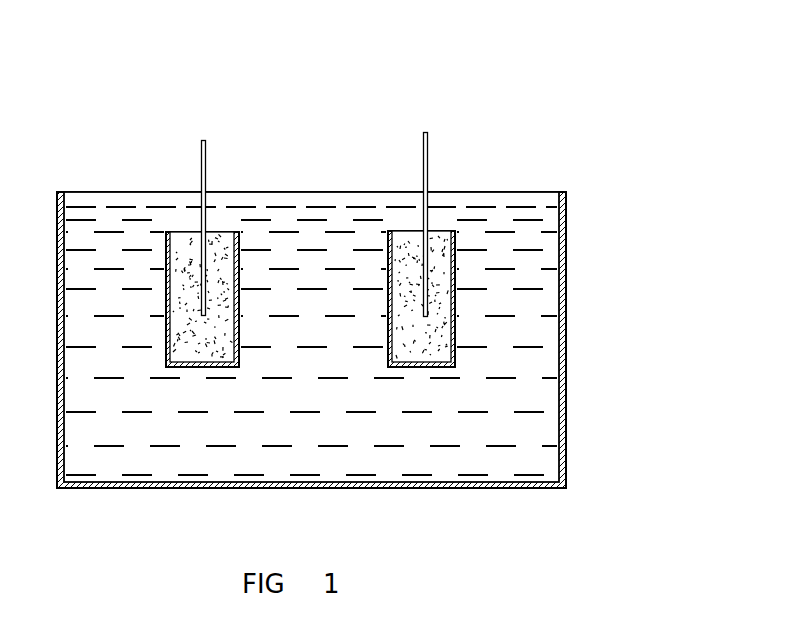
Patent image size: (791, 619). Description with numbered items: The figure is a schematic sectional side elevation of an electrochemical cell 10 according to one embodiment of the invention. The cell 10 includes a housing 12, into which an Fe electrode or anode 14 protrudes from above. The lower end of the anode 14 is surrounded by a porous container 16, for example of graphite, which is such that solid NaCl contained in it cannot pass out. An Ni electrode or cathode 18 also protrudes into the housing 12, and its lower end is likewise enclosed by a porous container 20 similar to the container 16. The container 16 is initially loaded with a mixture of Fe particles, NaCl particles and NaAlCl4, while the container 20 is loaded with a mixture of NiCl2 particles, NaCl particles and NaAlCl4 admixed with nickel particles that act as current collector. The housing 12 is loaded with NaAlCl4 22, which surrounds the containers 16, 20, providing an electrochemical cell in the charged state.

The electrochemical cell 10 is at (500, 33).
The housing 12 is at (566, 337).
The Fe electrode or anode 14 is at (205, 153).
The porous container 16 is at (239, 310).
The Ni electrode or cathode 18 is at (427, 158).
The porous container 20 is at (455, 307).
The NaAlCl4 22 is at (322, 448).